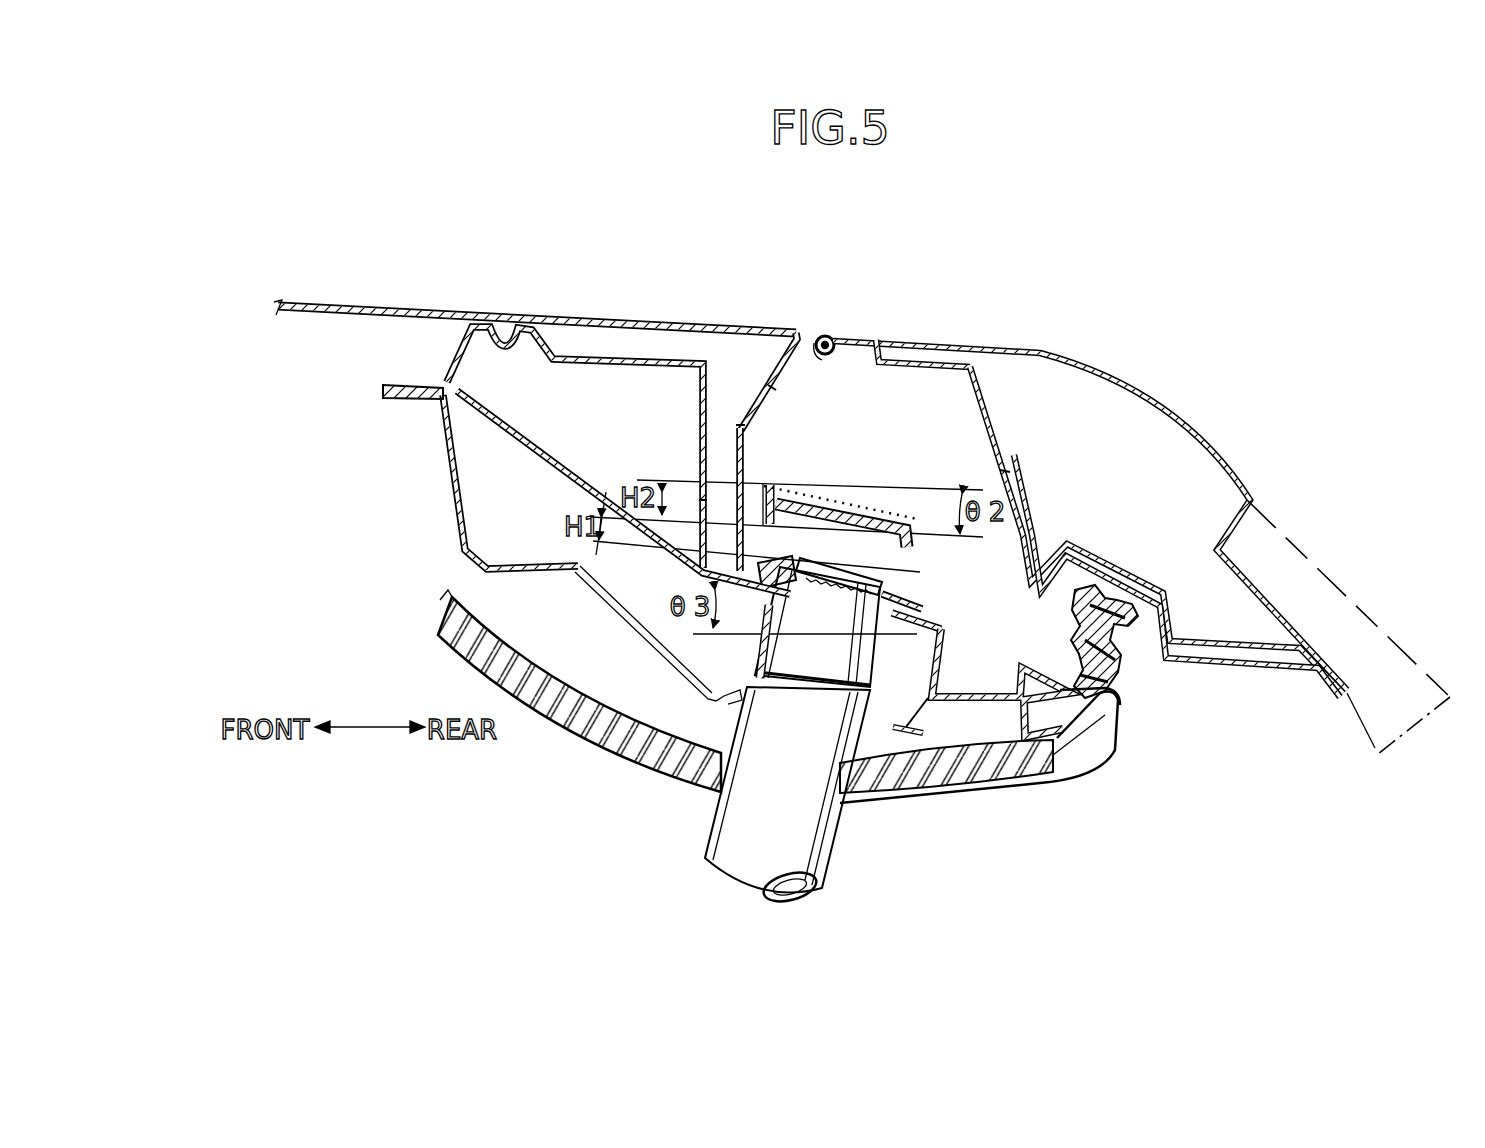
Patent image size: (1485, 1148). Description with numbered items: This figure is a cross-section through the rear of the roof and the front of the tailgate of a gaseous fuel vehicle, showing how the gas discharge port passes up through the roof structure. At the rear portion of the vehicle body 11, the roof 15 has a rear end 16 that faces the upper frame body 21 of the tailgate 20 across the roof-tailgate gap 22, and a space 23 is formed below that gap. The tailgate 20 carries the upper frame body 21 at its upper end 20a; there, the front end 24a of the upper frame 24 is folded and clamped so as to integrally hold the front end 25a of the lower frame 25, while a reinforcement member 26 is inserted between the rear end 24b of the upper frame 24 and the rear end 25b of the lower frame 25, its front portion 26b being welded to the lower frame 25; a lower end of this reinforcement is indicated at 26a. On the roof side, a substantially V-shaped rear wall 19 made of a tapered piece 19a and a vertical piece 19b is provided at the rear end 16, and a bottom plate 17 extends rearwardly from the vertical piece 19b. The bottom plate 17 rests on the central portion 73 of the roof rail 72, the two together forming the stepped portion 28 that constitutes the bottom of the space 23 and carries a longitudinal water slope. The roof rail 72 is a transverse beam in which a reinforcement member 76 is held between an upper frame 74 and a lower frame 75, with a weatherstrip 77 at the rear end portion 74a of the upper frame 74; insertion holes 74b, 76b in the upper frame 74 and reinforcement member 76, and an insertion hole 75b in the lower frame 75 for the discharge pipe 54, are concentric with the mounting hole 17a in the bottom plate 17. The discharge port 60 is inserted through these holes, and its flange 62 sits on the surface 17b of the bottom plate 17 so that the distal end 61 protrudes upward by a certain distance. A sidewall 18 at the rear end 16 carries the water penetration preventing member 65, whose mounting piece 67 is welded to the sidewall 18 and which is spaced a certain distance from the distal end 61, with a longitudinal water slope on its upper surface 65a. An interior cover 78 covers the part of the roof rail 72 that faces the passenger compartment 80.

The vehicle body 11 is at (1250, 403).
The roof 15 is at (450, 310).
The rear end of the roof 16 is at (797, 330).
The bottom plate 17 is at (738, 535).
The mounting hole 17a is at (908, 600).
The surface of the bottom plate 17b is at (914, 609).
The sidewall 18 is at (925, 398).
The rear wall 19 is at (752, 277).
The tapered piece 19a is at (772, 386).
The vertical piece 19b is at (743, 420).
The tailgate 20 is at (1307, 540).
The upper end of the tailgate 20a is at (1278, 513).
The upper frame body 21 is at (1160, 404).
The roof-tailgate gap 22 is at (823, 334).
The space 23 is at (950, 487).
The upper frame 24 is at (1104, 374).
The front end of the upper frame 24a is at (835, 338).
The rear end of the upper frame 24b is at (1313, 648).
The lower frame 25 is at (1000, 392).
The front end of the lower frame 25a is at (847, 340).
The rear end of the lower frame 25b is at (1322, 693).
The reinforcement member 26 is at (1120, 568).
The reinforcement panel lower end 26a is at (1320, 661).
The front portion of the reinforcement member 26b is at (1020, 470).
The stepped portion 28 is at (700, 505).
The discharge pipe 54 is at (838, 862).
The discharge port 60 is at (933, 780).
The distal end of the discharge port 61 is at (836, 571).
The flange 62 is at (778, 558).
The water penetration preventing member 65 is at (812, 493).
The upper surface of the water penetration preventing member 65a is at (796, 496).
The mounting piece 67 is at (874, 522).
The roof rail 72 is at (362, 438).
The central portion of the roof rail 73 is at (944, 628).
The upper frame of the roof rail 74 is at (517, 348).
The rear end portion of the upper frame 74a is at (1118, 690).
The insertion hole of the upper frame 74b is at (842, 696).
The lower frame of the roof rail 75 is at (455, 505).
The insertion hole of the lower frame 75b is at (935, 645).
The reinforcement member of the roof rail 76 is at (500, 428).
The insertion hole of the reinforcement member 76b is at (766, 630).
The weatherstrip 77 is at (1130, 632).
The interior cover 78 is at (565, 735).
The passenger compartment 80 is at (405, 826).